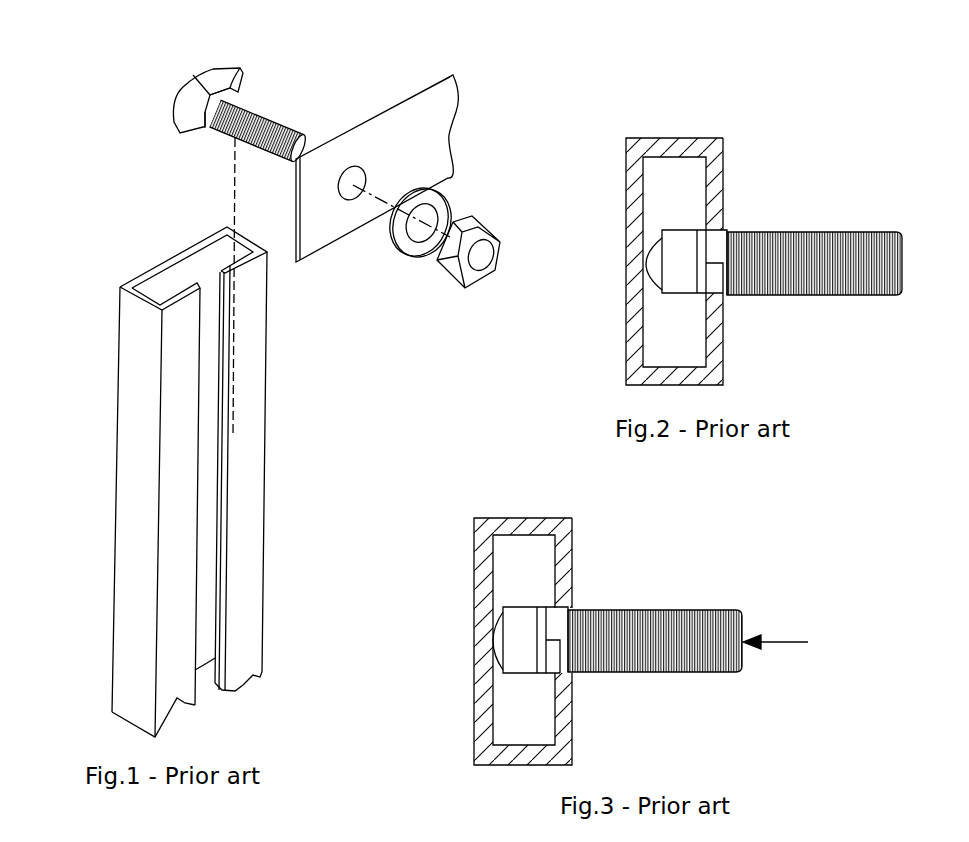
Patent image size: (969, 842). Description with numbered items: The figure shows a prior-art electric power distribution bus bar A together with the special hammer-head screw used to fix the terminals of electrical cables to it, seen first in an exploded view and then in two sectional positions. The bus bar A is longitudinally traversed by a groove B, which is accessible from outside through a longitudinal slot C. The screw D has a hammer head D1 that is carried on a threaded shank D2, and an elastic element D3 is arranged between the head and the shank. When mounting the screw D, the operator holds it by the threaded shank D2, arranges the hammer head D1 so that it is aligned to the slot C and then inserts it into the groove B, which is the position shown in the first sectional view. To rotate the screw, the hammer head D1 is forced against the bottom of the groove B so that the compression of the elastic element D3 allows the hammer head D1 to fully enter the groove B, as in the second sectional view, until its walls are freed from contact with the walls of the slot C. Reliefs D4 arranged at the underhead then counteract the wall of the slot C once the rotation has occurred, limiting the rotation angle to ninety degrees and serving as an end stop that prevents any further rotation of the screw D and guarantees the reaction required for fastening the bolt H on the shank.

In FIG. 1, the distribution bus bar A is at (110, 280).
In FIG. 2, the distribution bus bar A is at (695, 125).
In FIG. 3, the distribution bus bar A is at (462, 503).
In FIG. 1, the groove B is at (182, 272).
In FIG. 3, the groove B is at (522, 562).
In FIG. 1, the longitudinal slot C is at (210, 478).
In FIG. 1, the screw D is at (290, 87).
In FIG. 2, the screw D is at (808, 208).
In FIG. 3, the screw D is at (682, 592).
In FIG. 1, the hammer head D1 is at (210, 78).
In FIG. 3, the hammer head D1 is at (523, 653).
In FIG. 1, the threaded shank D2 is at (278, 135).
In FIG. 2, the threaded shank D2 is at (837, 253).
In FIG. 3, the threaded shank D2 is at (660, 655).
In FIG. 2, the elastic element D3 is at (655, 262).
In FIG. 3, the elastic element D3 is at (495, 642).
In FIG. 1, the reliefs D4 is at (227, 90).
In FIG. 2, the reliefs D4 is at (710, 277).
In FIG. 3, the reliefs D4 is at (555, 652).
In FIG. 1, the bolt H is at (450, 255).